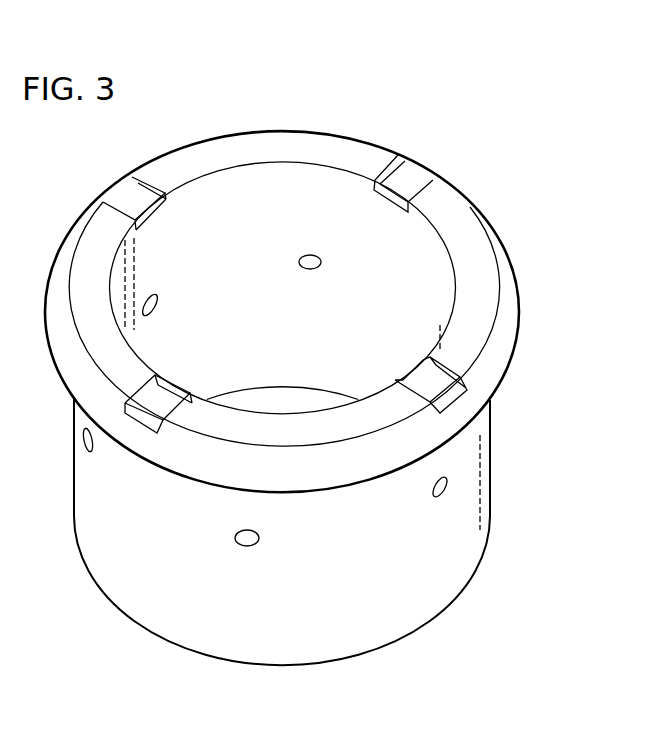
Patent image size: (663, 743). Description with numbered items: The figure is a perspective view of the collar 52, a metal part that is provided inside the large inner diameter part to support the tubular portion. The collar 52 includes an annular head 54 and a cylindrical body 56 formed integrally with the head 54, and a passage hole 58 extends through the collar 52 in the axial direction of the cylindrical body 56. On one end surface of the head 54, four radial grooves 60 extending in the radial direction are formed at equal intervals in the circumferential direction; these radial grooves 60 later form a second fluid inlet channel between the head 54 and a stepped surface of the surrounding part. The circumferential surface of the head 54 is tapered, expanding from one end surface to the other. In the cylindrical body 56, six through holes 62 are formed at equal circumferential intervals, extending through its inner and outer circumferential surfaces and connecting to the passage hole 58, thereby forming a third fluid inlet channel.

The collar 52 is at (470, 175).
The annular head 54 is at (503, 332).
The cylindrical body 56 is at (468, 498).
The passage hole 58 is at (303, 189).
The radial grooves 60 is at (384, 172).
The through holes 62 is at (252, 547).